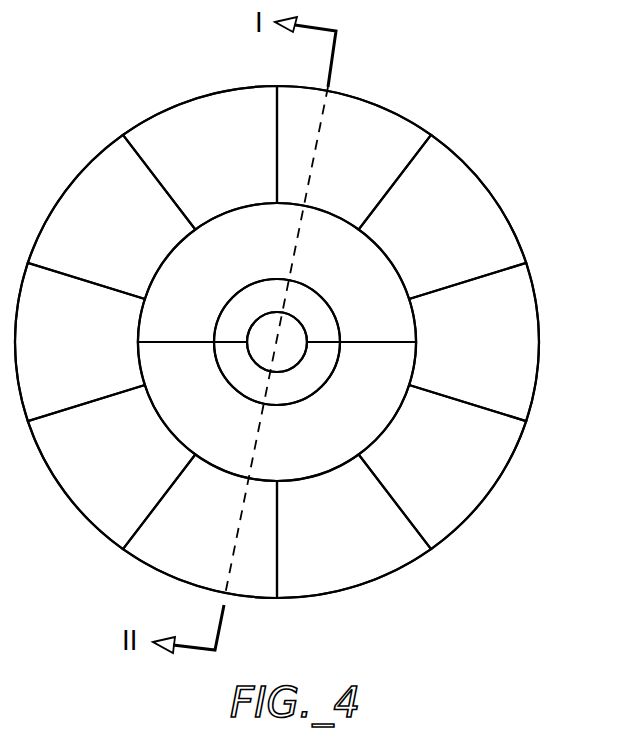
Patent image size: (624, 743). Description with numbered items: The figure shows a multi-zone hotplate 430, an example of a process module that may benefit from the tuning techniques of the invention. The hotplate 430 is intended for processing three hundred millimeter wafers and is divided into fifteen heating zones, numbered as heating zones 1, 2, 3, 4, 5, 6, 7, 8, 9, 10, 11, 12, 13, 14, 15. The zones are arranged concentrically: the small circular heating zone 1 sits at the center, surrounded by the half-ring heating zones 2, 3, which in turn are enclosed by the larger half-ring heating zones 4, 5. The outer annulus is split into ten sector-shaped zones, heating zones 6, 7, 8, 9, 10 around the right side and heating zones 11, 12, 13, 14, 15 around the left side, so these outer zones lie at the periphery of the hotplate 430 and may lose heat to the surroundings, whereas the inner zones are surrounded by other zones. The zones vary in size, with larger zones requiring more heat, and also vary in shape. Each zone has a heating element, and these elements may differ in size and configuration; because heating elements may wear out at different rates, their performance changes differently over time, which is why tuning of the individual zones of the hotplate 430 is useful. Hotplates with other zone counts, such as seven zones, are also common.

The heating zone 1 is at (277, 342).
The heating zone 2 is at (277, 310).
The heating zone 3 is at (277, 373).
The heating zone 4 is at (277, 272).
The heating zone 5 is at (277, 411).
The heating zone 6 is at (354, 158).
The heating zone 7 is at (443, 217).
The heating zone 8 is at (474, 342).
The heating zone 9 is at (443, 467).
The heating zone 10 is at (354, 527).
The heating zone 11 is at (200, 527).
The heating zone 12 is at (112, 467).
The heating zone 13 is at (80, 342).
The heating zone 14 is at (112, 217).
The heating zone 15 is at (200, 158).
The hotplate 430 is at (475, 152).